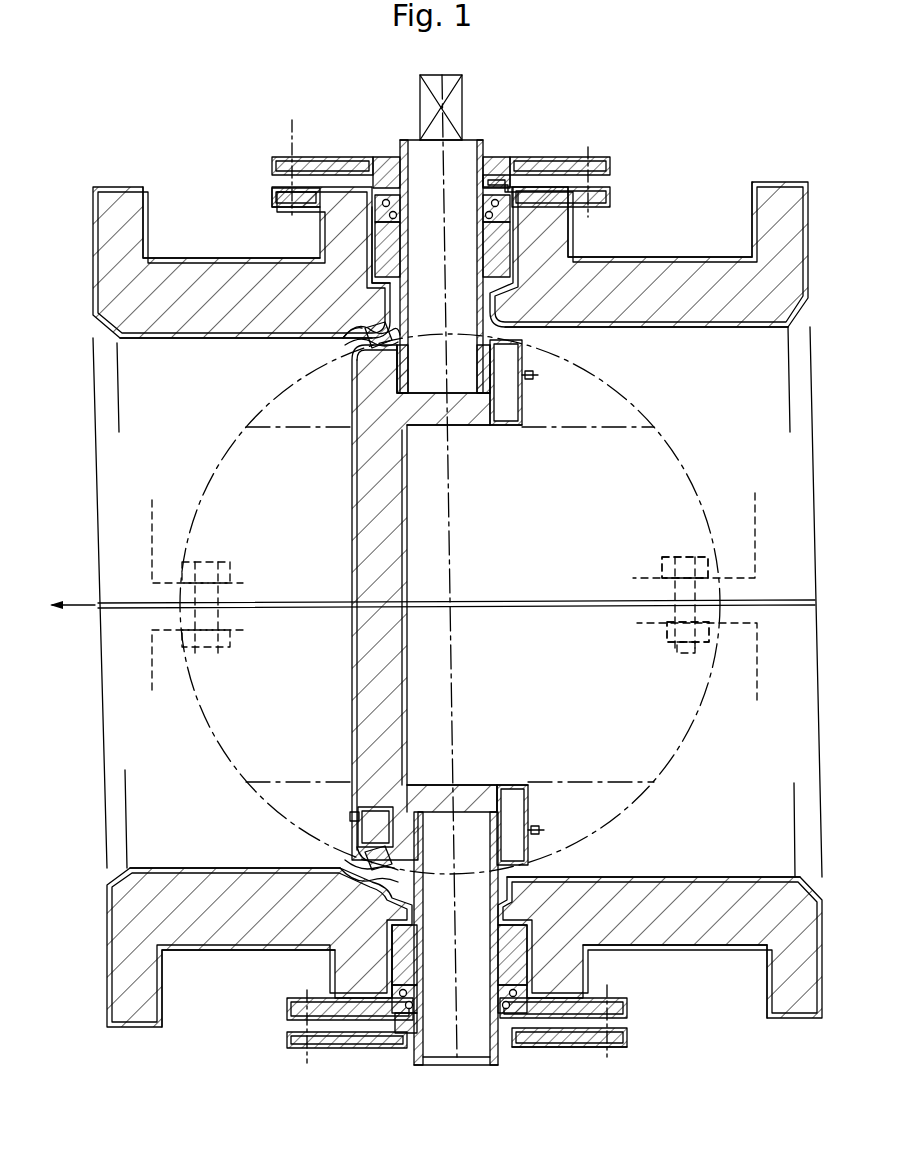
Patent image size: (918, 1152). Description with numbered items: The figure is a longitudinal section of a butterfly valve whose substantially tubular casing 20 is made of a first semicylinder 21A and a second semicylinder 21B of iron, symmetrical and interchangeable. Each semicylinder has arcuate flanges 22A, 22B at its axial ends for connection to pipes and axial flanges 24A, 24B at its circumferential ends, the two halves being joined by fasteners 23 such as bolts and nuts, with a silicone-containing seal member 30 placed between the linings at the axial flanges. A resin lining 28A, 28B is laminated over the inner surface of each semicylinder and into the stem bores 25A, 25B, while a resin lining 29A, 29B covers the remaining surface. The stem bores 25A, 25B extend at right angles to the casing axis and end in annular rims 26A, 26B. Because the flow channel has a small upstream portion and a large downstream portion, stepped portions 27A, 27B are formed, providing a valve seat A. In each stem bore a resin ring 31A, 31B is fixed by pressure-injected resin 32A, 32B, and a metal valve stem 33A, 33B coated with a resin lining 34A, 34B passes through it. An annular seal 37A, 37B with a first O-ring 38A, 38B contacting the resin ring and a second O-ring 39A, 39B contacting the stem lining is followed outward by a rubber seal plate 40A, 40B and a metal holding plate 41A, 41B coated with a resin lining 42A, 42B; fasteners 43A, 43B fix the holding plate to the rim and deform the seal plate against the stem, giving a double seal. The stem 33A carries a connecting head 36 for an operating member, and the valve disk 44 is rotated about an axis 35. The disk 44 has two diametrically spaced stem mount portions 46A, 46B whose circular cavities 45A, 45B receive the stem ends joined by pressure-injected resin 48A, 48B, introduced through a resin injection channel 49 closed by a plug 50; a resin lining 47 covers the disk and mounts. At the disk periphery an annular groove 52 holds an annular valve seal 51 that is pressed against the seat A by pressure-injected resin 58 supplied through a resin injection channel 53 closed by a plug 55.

The tubular casing 20 is at (96, 780).
The first semicylinder 21A is at (683, 265).
The second semicylinder 21B is at (720, 933).
The arcuate flange 22A is at (116, 207).
The arcuate flange 22B is at (132, 1010).
The fasteners 23 is at (218, 560).
The axial flange 24A is at (645, 557).
The axial flange 24B is at (648, 642).
The stem bore 25A is at (377, 267).
The stem bore 25B is at (387, 967).
The annular rim 26A is at (285, 197).
The annular rim 26B is at (293, 1012).
The stepped portion 27A is at (343, 348).
The stepped portion 27B is at (373, 870).
The resin lining 28A is at (208, 340).
The resin lining 28B is at (204, 866).
The resin lining 29A is at (187, 256).
The resin lining 29B is at (197, 953).
The seal member 30 is at (760, 605).
The resin ring 31A is at (565, 250).
The resin ring 31B is at (510, 963).
The pressure-injected resin 32A is at (500, 262).
The pressure-injected resin 32B is at (580, 878).
The metal valve stem 33A is at (480, 150).
The metal valve stem 33B is at (483, 1062).
The resin lining 34A is at (488, 172).
The resin lining 34B is at (417, 1064).
The axis 35 is at (452, 562).
The connecting head 36 is at (440, 74).
The annular seal 37A is at (380, 158).
The annular seal 37B is at (387, 1049).
The first O-ring 38A is at (395, 232).
The first O-ring 38B is at (508, 966).
The second O-ring 39A is at (398, 200).
The second O-ring 39B is at (488, 1014).
The rubber seal plate 40A is at (490, 200).
The rubber seal plate 40B is at (530, 1015).
The holding plate 41A is at (575, 157).
The holding plate 41B is at (575, 1048).
The resin lining 42A is at (605, 190).
The resin lining 42B is at (625, 1018).
The fasteners 43A is at (290, 155).
The fasteners 43B is at (612, 1048).
The valve disk 44 is at (378, 648).
The circular cavity 45A is at (484, 398).
The circular cavity 45B is at (497, 788).
The stem mount portion 46A is at (519, 447).
The stem mount portion 46B is at (533, 766).
The resin lining 47 is at (407, 568).
The pressure-injected resin 48A is at (500, 427).
The pressure-injected resin 48B is at (410, 785).
The resin injection channel 49 is at (522, 406).
The plug 50 is at (533, 375).
The annular valve seal 51 is at (390, 338).
The annular groove 52 is at (351, 816).
The resin injection channel 53 is at (357, 800).
The plug 55 is at (355, 815).
The pressure-injected resin 58 is at (398, 372).
The valve seat A is at (362, 328).